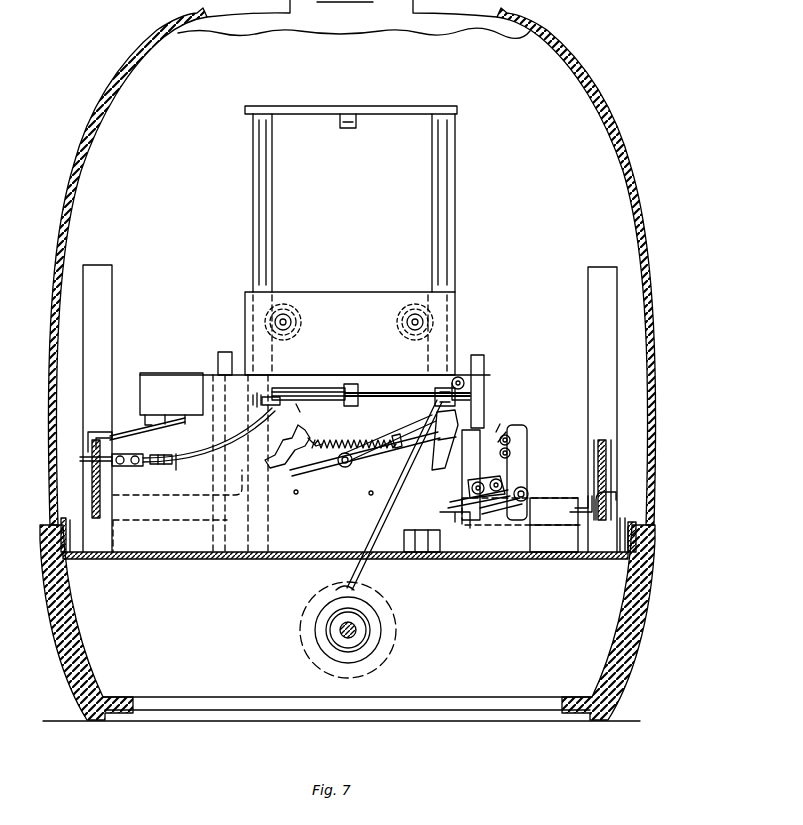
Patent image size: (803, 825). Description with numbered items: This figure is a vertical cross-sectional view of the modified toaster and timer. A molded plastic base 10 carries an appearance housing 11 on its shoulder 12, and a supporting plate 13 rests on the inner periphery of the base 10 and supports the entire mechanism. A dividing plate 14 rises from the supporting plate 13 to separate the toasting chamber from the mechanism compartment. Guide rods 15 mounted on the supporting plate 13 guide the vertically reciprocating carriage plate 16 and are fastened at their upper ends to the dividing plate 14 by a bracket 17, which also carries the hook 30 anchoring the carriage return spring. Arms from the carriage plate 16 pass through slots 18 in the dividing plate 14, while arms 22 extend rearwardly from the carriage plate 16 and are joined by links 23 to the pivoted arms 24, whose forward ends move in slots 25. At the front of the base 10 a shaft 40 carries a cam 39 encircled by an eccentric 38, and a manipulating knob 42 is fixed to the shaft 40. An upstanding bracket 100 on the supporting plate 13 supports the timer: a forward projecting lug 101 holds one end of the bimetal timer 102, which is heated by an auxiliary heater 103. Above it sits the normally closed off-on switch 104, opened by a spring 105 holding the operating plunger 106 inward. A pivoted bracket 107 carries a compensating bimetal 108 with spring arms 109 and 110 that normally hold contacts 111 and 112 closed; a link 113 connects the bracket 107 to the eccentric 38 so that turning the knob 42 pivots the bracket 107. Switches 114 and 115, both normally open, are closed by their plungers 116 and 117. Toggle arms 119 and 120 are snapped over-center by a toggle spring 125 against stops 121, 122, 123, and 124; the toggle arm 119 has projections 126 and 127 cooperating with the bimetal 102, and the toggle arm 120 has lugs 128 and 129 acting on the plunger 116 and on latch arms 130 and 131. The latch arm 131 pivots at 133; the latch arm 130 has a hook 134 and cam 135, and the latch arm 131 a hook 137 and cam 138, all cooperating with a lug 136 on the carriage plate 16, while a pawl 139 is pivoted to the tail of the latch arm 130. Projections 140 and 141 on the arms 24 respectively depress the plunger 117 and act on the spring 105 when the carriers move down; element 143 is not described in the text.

The base 10 is at (655, 603).
The appearance housing 11 is at (647, 405).
The shoulder 12 is at (636, 530).
The supporting plate 13 is at (545, 562).
The dividing plate 14 is at (161, 176).
The guide rods 15 is at (272, 202).
The carriage plate 16 is at (350, 333).
The bracket 17 is at (368, 108).
The slots 18 is at (218, 358).
The arms 22 is at (148, 523).
The links 23 is at (347, 535).
The arms 24 is at (92, 480).
The slots 25 is at (113, 301).
The hook 30 is at (356, 118).
The eccentric 38 is at (378, 617).
The cam 39 is at (347, 621).
The shaft 40 is at (328, 632).
The manipulating knob 42 is at (392, 652).
The upstanding bracket 100 is at (289, 537).
The forward projecting lug 101 is at (135, 466).
The bimetal timer 102 is at (195, 440).
The auxiliary heater 103 is at (165, 455).
The off-on switch 104 is at (171, 394).
The spring 105 is at (147, 435).
The operating plunger 106 is at (145, 420).
The bracket 107 is at (464, 388).
The compensating bimetal 108 is at (407, 390).
The spring arm 109 is at (326, 388).
The spring arm 110 is at (350, 406).
The contact 111 is at (270, 400).
The contact 112 is at (277, 409).
The link 113 is at (375, 542).
The switch 114 is at (404, 542).
The switch 115 is at (554, 525).
The operating plunger 116 is at (440, 514).
The operating plunger 117 is at (570, 508).
The toggle arm 119 is at (328, 470).
The toggle arm 120 is at (380, 465).
The stop 121 is at (398, 434).
The stop 122 is at (322, 436).
The stop 123 is at (296, 494).
The stop 124 is at (371, 495).
The toggle spring 125 is at (365, 436).
The projection 126 is at (303, 412).
The projection 127 is at (287, 447).
The lug 128 is at (452, 440).
The lug 129 is at (435, 398).
The latch arm 130 is at (478, 473).
The latch arm 131 is at (527, 437).
The pivot 133 is at (528, 492).
The hook 134 is at (492, 509).
The cam 135 is at (503, 435).
The lug 136 is at (510, 453).
The hook 137 is at (500, 424).
The cam 138 is at (506, 432).
The pawl 139 is at (468, 486).
The projection 140 is at (616, 492).
The projection 141 is at (100, 432).
The arm 143 is at (450, 506).